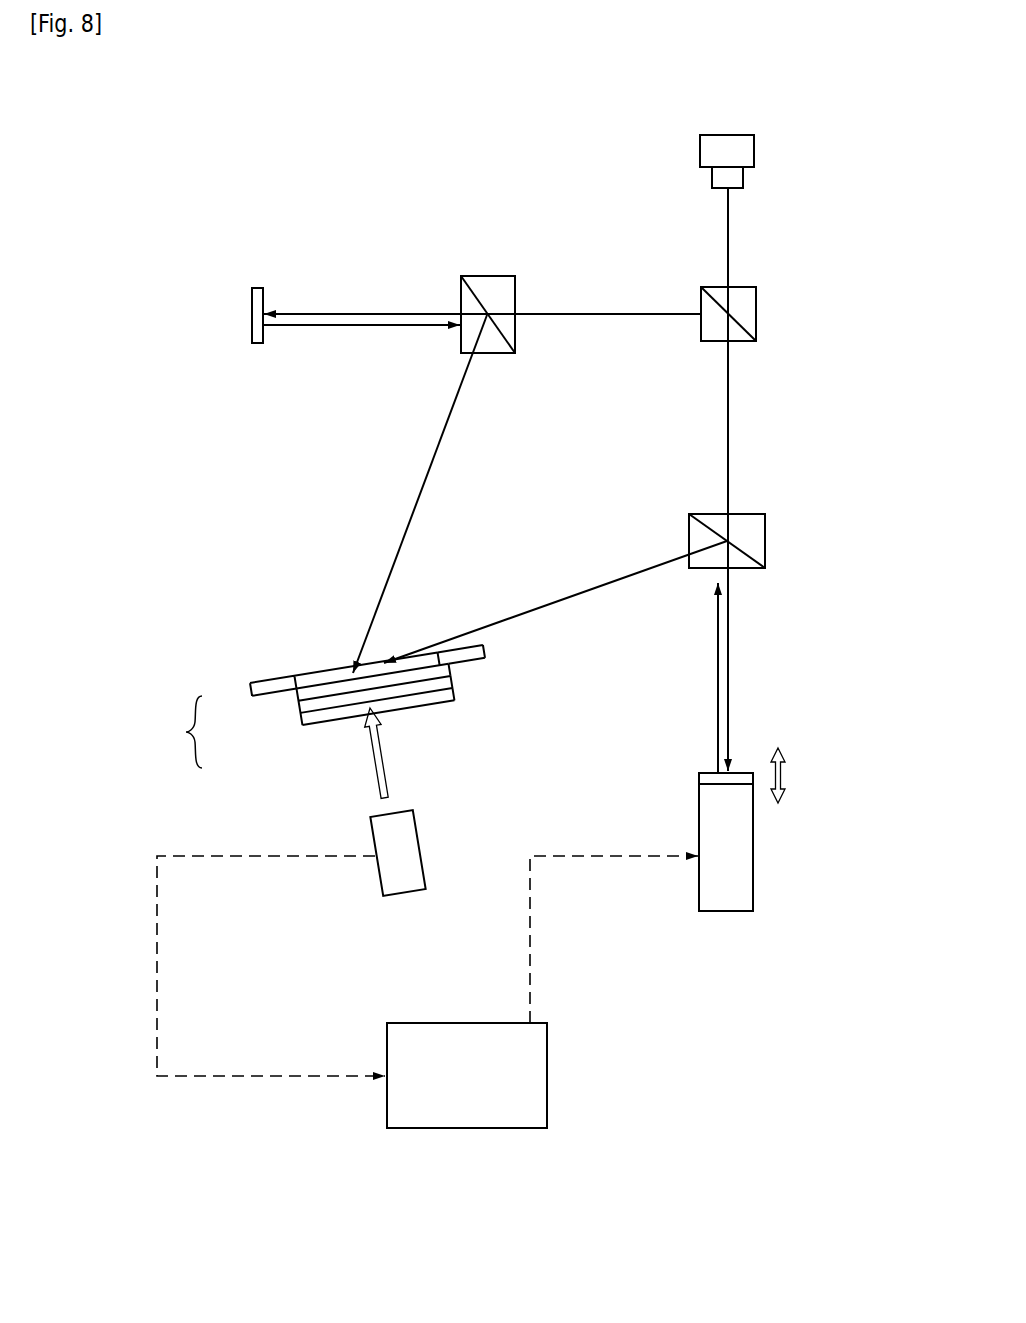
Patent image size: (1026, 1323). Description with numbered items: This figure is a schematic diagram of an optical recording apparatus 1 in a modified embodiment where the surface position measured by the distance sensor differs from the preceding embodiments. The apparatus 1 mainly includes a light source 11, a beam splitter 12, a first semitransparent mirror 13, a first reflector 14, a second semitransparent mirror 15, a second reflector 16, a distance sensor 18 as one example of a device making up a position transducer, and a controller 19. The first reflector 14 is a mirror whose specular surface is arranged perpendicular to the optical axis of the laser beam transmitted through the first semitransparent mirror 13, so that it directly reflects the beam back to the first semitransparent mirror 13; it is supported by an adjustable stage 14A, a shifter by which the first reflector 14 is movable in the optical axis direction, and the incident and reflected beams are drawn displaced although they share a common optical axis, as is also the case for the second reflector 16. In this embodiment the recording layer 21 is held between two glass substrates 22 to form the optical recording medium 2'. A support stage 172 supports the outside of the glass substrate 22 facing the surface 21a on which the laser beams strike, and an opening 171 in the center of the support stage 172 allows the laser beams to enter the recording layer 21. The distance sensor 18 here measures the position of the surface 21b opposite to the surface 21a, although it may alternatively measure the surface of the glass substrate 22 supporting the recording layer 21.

The optical recording apparatus 1 is at (284, 154).
The light source 11 is at (756, 152).
The beam splitter 12 is at (756, 314).
The first semitransparent mirror 13 is at (765, 541).
The first reflector 14 is at (755, 777).
The adjustable stage 14A is at (753, 843).
The second semitransparent mirror 15 is at (489, 276).
The second reflector 16 is at (257, 288).
The distance sensor 18 is at (407, 890).
The controller 19 is at (467, 1128).
The opening 171 is at (303, 675).
The support stage 172 is at (483, 648).
The optical recording medium 2' is at (177, 732).
The recording layer 21 is at (298, 708).
The surface 21a is at (340, 688).
The surface 21b is at (341, 716).
The glass substrate 22 is at (293, 697).